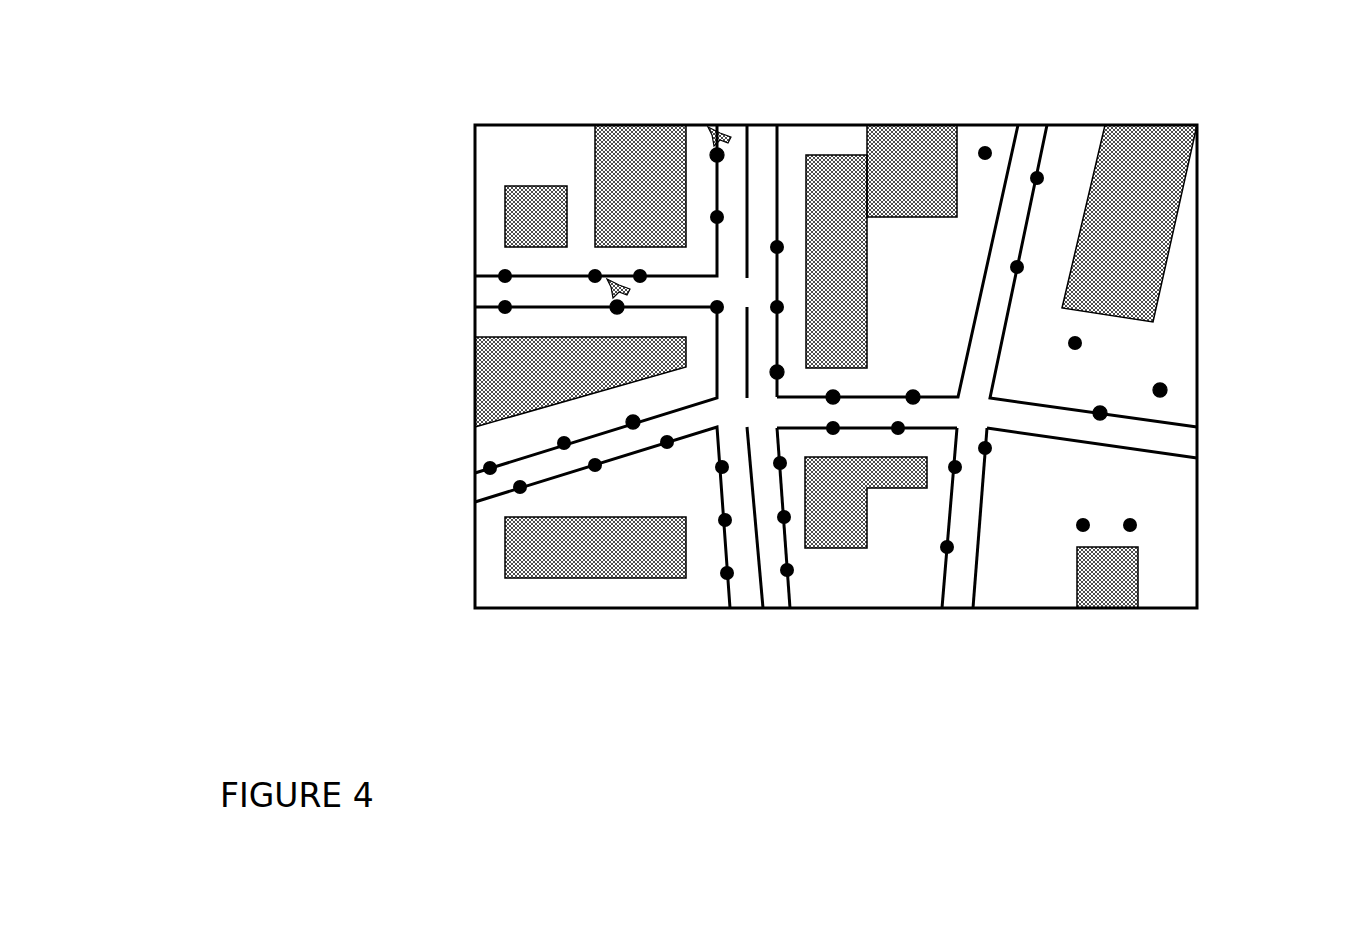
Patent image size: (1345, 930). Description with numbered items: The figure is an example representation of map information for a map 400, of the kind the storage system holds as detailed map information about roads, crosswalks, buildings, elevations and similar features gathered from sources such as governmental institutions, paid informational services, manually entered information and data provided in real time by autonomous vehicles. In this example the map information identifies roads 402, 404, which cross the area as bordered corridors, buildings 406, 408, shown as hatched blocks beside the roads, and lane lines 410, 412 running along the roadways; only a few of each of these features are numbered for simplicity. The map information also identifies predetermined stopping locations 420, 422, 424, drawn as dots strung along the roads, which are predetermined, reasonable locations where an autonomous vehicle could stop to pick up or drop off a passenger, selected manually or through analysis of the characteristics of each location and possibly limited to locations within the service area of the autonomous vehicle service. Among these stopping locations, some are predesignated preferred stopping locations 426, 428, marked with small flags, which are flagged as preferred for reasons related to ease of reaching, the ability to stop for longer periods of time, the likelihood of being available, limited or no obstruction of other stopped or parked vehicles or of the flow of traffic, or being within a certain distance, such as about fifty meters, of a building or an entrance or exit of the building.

The map 400 is at (318, 755).
The road 402 is at (935, 413).
The road 404 is at (985, 375).
The building 406 is at (826, 155).
The building 408 is at (930, 126).
The lane line 410 is at (775, 336).
The lane line 412 is at (745, 320).
The predetermined stopping location 420 is at (833, 400).
The predetermined stopping location 422 is at (775, 375).
The predetermined stopping location 424 is at (913, 405).
The predesignated preferred stopping location 426 is at (719, 126).
The predesignated preferred stopping location 428 is at (613, 303).